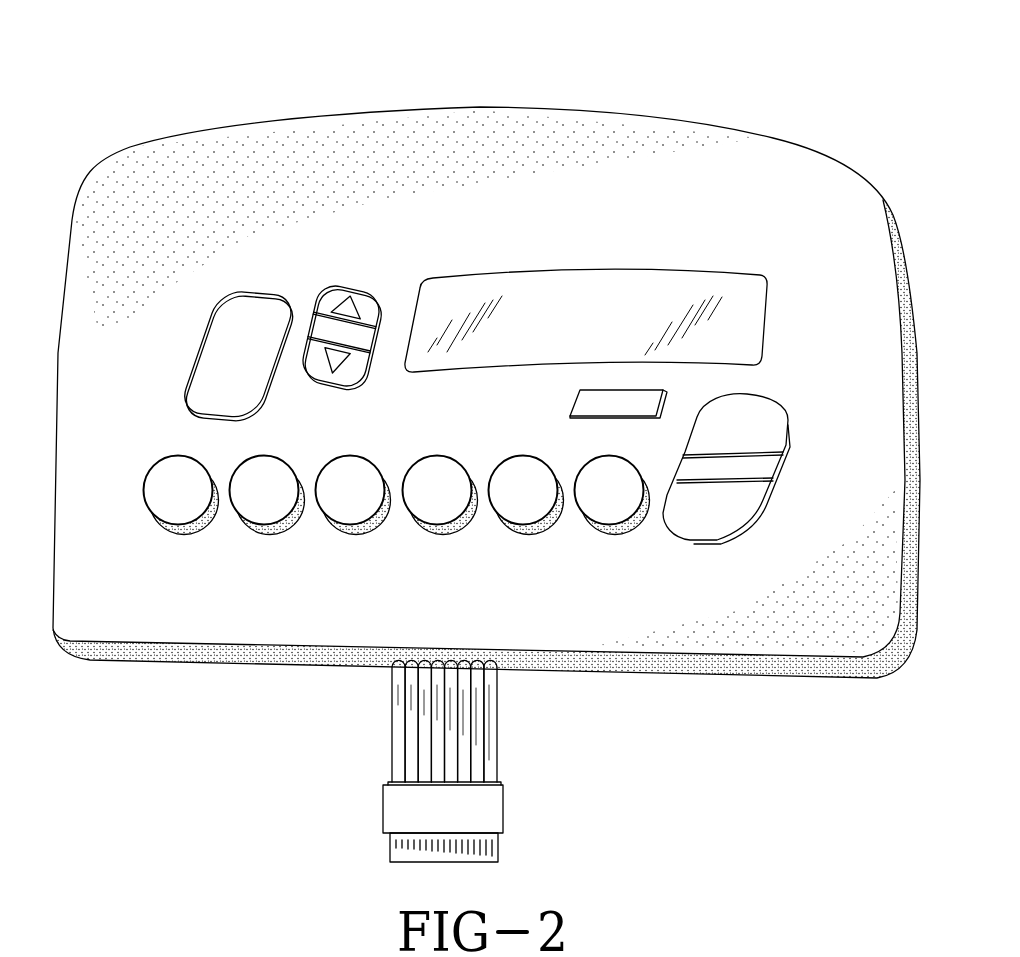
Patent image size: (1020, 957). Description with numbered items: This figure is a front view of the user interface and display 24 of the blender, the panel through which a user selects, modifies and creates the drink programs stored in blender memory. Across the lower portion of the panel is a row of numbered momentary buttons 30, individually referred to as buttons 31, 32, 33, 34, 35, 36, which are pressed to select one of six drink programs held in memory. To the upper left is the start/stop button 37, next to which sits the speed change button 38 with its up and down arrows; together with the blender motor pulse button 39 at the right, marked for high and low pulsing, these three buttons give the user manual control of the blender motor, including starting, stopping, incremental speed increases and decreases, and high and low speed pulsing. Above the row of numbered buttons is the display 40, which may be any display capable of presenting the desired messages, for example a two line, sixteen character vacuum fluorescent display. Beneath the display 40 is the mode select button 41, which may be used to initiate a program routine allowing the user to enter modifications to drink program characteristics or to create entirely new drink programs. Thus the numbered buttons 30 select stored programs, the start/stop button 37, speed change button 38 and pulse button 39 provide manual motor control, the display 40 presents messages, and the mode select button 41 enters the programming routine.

The user interface and display 24 is at (773, 138).
The numbered momentary buttons 30 is at (232, 582).
The numbered momentary button 31 is at (184, 535).
The numbered momentary button 32 is at (270, 535).
The numbered momentary button 33 is at (356, 535).
The numbered momentary button 34 is at (443, 535).
The numbered momentary button 35 is at (529, 535).
The numbered momentary button 36 is at (615, 535).
The start/stop button 37 is at (210, 395).
The speed change button 38 is at (373, 296).
The blender motor pulse button 39 is at (693, 530).
The display 40 is at (644, 270).
The mode select button 41 is at (572, 400).